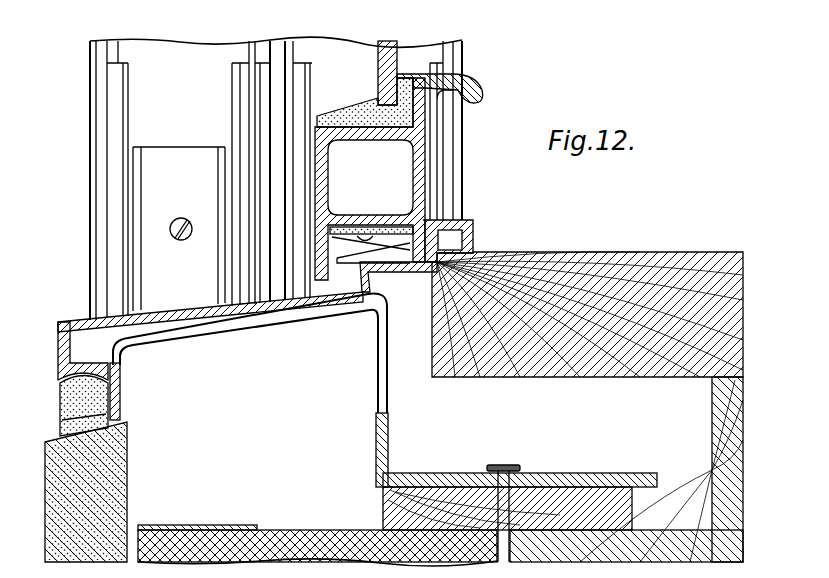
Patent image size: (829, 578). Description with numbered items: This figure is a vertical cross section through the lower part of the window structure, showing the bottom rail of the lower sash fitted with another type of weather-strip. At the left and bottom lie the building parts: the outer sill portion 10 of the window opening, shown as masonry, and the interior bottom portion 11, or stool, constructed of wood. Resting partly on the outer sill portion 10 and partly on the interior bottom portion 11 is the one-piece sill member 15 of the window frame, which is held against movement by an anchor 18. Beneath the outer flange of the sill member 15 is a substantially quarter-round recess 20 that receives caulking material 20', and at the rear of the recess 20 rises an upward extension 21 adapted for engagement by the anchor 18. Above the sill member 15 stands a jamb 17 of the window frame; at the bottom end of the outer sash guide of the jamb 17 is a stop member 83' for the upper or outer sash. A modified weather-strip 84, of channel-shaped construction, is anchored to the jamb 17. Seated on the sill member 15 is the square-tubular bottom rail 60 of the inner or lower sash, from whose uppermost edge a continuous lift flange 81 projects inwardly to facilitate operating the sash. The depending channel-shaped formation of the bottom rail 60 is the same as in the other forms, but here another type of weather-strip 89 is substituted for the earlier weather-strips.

The jamb 17 is at (160, 42).
The modified weather-strip 84 is at (318, 73).
The stop member 83' is at (139, 229).
The lift flange 81 is at (481, 93).
The bottom rail 60 is at (428, 171).
The weather-strip 89 is at (350, 263).
The sill member 15 is at (67, 322).
The upward extension 21 is at (121, 396).
The quarter-round recess 20 is at (70, 406).
The caulking material 20' is at (69, 423).
The outer sill portion 10 is at (120, 490).
The anchor 18 is at (588, 473).
The interior bottom portion 11 is at (620, 252).